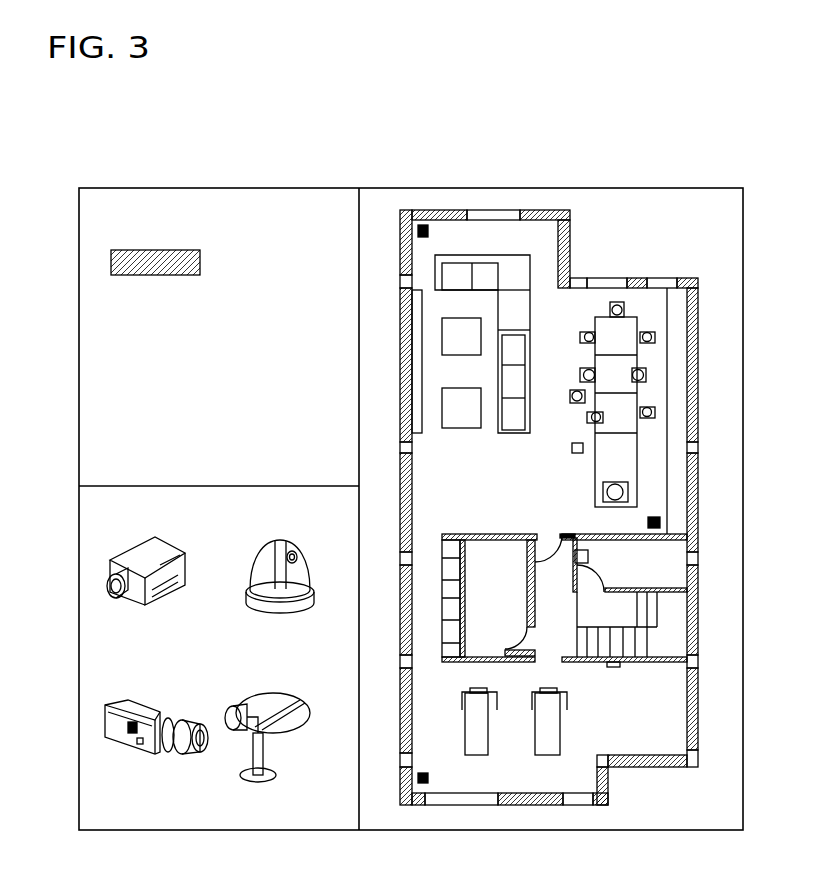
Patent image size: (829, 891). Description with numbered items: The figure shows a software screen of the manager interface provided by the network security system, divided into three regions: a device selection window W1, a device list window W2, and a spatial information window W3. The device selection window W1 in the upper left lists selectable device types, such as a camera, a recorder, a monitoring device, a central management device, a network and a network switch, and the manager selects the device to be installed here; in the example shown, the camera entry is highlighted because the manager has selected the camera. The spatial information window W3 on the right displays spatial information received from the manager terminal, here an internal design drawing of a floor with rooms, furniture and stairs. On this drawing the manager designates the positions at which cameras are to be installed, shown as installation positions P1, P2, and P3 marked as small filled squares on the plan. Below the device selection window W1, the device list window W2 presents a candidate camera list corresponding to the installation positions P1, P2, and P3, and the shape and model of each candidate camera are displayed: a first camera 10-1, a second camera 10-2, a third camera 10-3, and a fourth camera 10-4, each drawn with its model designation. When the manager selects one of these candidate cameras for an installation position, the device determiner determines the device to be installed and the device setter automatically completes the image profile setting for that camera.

The device selection window W1 is at (218, 187).
The device list window W2 is at (219, 684).
The spatial information window W3 is at (572, 514).
The first camera 10-1 is at (172, 542).
The second camera 10-2 is at (283, 535).
The third camera 10-3 is at (148, 705).
The fourth camera 10-4 is at (287, 700).
The installation position P1 is at (660, 523).
The installation position P2 is at (423, 225).
The installation position P3 is at (423, 783).